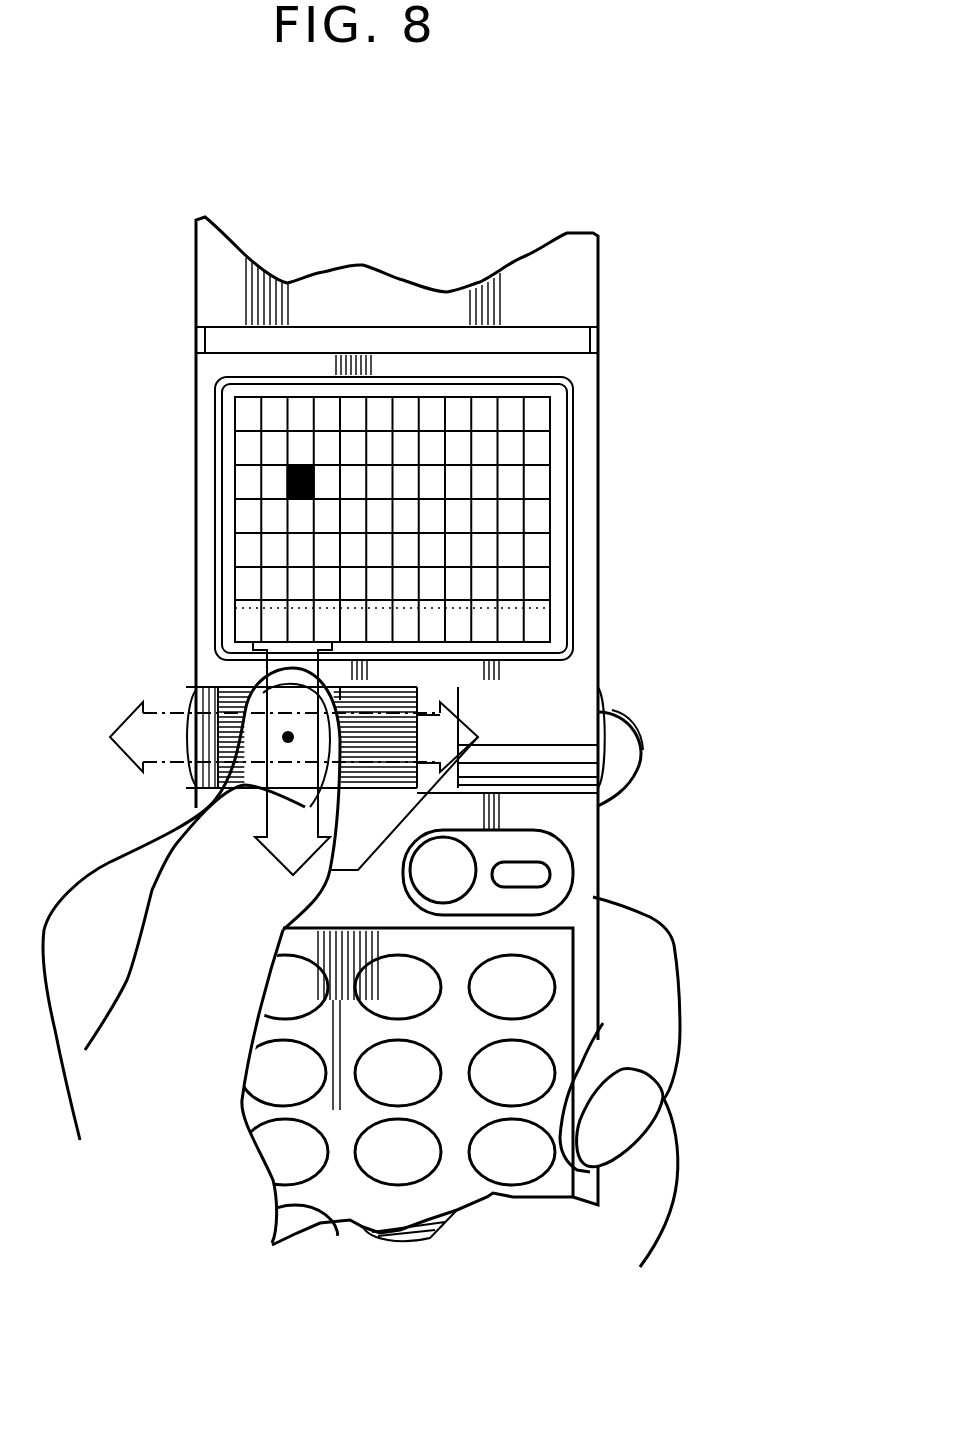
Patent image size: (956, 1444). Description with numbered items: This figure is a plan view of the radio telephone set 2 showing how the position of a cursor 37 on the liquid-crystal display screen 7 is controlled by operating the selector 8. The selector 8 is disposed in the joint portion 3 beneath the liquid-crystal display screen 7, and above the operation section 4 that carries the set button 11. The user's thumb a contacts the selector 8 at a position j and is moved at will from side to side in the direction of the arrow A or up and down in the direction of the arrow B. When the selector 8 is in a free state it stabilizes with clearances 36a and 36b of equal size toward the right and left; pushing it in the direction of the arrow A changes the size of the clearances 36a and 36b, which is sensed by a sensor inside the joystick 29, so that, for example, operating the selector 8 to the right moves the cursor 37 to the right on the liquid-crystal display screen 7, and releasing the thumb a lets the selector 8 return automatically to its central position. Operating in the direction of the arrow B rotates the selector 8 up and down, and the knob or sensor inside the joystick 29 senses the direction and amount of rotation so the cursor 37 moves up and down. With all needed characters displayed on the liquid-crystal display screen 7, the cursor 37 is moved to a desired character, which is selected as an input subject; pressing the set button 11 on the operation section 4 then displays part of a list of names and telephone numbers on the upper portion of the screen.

The portable information terminal body 2 is at (598, 400).
The joint portion 3 is at (605, 705).
The operation section 4 is at (598, 873).
The liquid-crystal display screen 7 is at (554, 499).
The selector 8 is at (390, 770).
The set button 11 is at (395, 840).
The joystick 29 is at (548, 702).
The clearance 36a is at (450, 700).
The clearance 36b is at (215, 687).
The cursor 37 is at (290, 480).
The position j is at (288, 737).
The arrow A is at (143, 707).
The arrow B is at (266, 815).
The thumb a is at (197, 842).